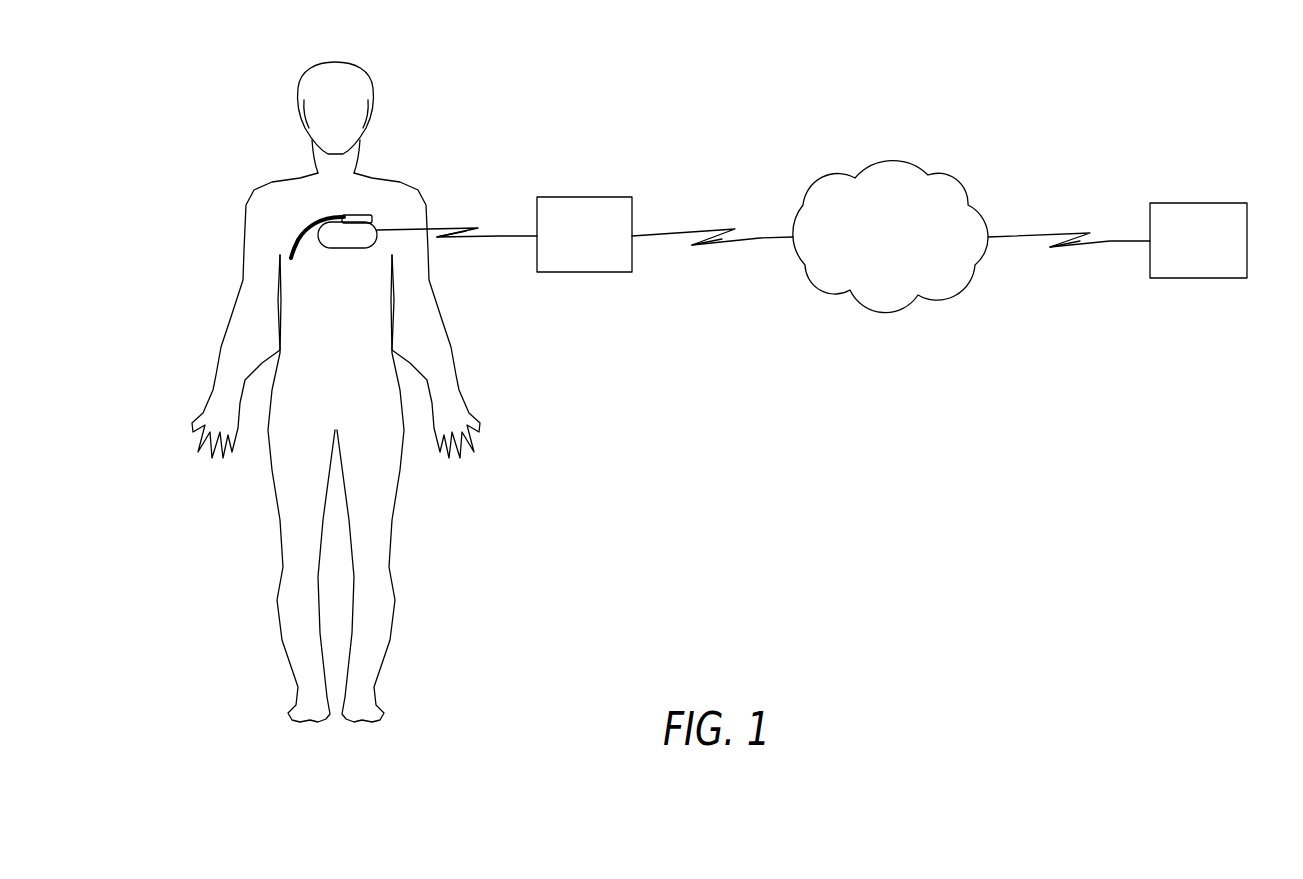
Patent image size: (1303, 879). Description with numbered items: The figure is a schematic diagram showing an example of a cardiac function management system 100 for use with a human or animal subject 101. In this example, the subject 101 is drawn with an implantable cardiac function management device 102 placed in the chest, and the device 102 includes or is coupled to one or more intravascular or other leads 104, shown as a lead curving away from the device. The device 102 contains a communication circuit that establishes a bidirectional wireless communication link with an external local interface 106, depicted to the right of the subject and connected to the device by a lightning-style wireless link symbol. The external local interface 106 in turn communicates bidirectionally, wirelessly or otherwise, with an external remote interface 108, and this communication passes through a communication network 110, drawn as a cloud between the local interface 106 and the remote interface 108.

The cardiac function management system 100 is at (1143, 63).
The human or animal subject 101 is at (285, 177).
The implantable cardiac function management device 102 is at (353, 213).
The leads 104 is at (318, 218).
The external local interface 106 is at (585, 197).
The external remote interface 108 is at (1198, 203).
The communication network 110 is at (952, 177).